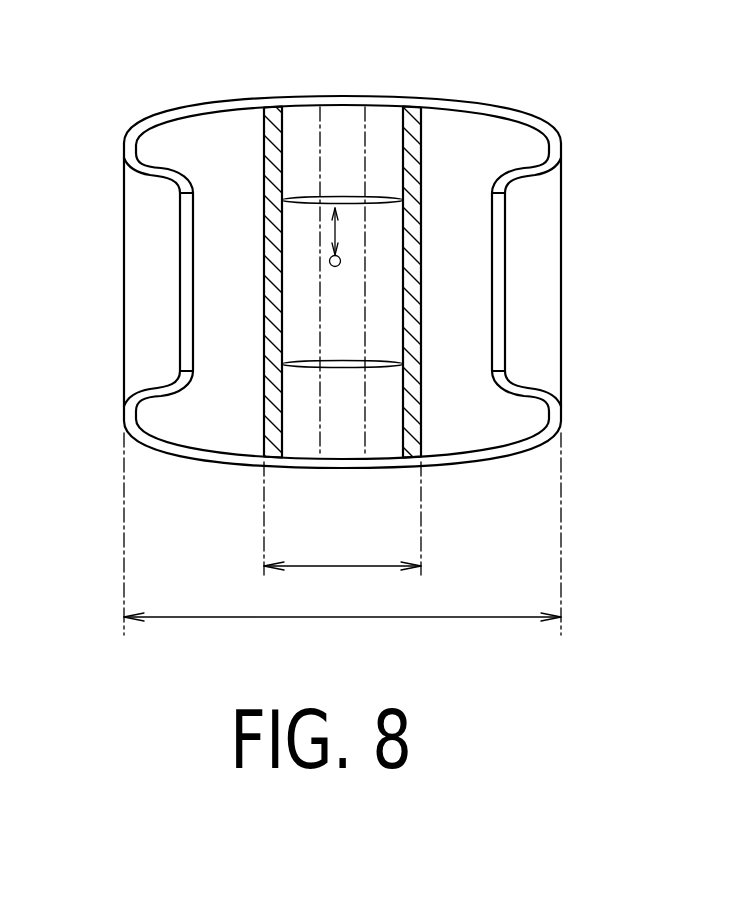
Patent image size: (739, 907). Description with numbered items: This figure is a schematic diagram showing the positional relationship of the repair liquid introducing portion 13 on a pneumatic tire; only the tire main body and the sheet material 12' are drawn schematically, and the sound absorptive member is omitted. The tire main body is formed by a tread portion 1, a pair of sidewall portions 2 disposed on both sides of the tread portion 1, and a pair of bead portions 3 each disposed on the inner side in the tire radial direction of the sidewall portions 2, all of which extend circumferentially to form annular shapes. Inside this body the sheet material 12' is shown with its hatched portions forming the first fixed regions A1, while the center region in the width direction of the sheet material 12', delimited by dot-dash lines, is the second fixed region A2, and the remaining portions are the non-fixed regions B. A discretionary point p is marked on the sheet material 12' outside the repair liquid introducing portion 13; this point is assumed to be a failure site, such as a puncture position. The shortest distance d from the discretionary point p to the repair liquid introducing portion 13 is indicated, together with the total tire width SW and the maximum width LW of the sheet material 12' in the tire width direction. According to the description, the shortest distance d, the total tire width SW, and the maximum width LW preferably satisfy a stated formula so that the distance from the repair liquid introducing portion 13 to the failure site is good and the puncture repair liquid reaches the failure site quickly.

The tread portion 1 is at (319, 292).
The sidewall portions 2 is at (568, 418).
The bead portions 3 is at (512, 377).
The sheet material 12' is at (233, 319).
The repair liquid introducing portion 13 is at (282, 200).
The discretionary point p is at (329, 261).
The shortest distance d is at (344, 231).
The first fixed regions A1 is at (318, 295).
The second fixed region A2 is at (343, 112).
The non-fixed regions B is at (305, 118).
The maximum width of the sheet material LW is at (342, 530).
The total tire width SW is at (342, 542).